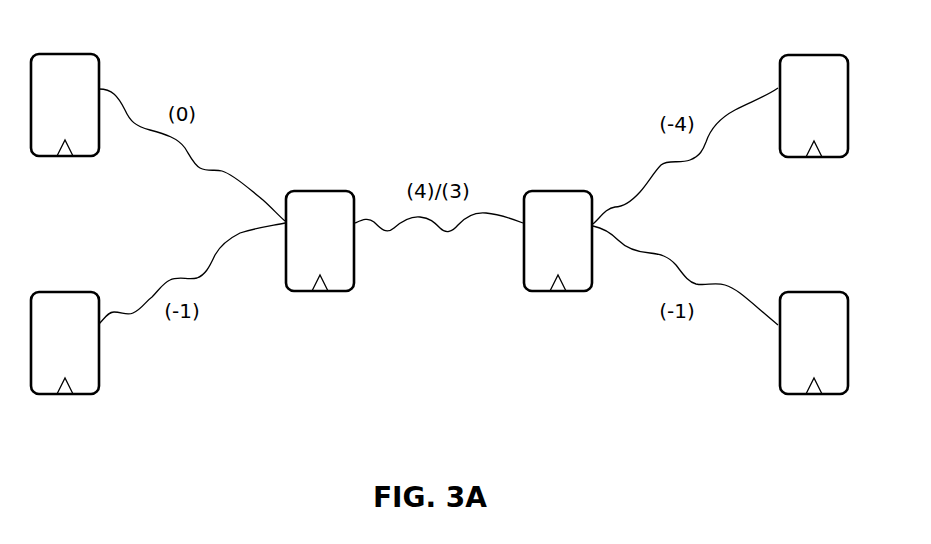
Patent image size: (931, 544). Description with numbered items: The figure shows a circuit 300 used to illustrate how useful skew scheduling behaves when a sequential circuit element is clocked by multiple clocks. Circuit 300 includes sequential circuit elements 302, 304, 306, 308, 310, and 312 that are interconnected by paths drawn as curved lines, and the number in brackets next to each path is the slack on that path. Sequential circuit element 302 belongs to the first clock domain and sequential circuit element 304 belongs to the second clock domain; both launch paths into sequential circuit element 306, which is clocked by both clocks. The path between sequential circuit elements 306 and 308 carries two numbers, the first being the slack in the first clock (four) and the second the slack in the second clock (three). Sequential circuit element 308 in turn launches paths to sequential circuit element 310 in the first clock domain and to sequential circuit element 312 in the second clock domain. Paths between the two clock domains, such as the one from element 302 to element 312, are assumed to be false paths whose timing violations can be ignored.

The circuit 300 is at (438, 181).
The sequential circuit element 302 is at (65, 86).
The sequential circuit element 304 is at (65, 363).
The sequential circuit element 306 is at (320, 261).
The sequential circuit element 308 is at (558, 261).
The sequential circuit element 310 is at (814, 87).
The sequential circuit element 312 is at (814, 363).